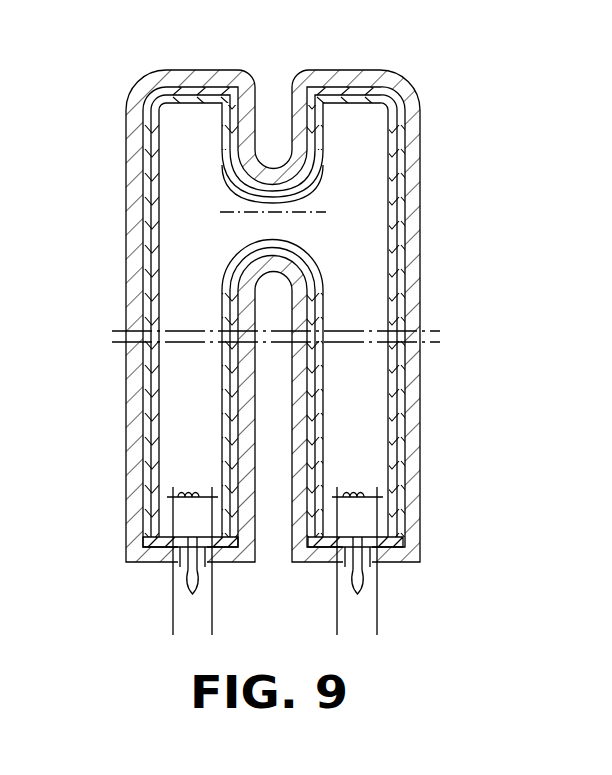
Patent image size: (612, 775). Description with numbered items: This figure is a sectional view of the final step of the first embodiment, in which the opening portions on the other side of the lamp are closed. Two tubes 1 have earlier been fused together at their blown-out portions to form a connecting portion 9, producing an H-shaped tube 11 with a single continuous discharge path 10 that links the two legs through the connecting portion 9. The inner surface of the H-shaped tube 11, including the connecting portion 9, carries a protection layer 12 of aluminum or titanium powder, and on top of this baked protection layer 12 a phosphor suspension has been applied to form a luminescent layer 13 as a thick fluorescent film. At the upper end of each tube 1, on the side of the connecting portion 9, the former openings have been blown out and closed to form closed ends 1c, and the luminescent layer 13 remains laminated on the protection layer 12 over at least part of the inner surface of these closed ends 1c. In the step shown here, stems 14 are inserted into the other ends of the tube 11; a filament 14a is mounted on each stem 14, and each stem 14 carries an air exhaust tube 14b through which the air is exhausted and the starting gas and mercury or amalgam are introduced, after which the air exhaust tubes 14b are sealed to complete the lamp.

The tube 1 is at (127, 367).
The closed end 1c is at (191, 69).
The connecting portion 9 is at (271, 163).
The discharge path 10 is at (223, 209).
The H-shaped tube 11 is at (437, 79).
The protection layer 12 is at (132, 208).
The luminescent layer 13 is at (164, 258).
The stem 14 is at (153, 568).
The filament 14a is at (192, 487).
The air exhaust tube 14b is at (202, 586).